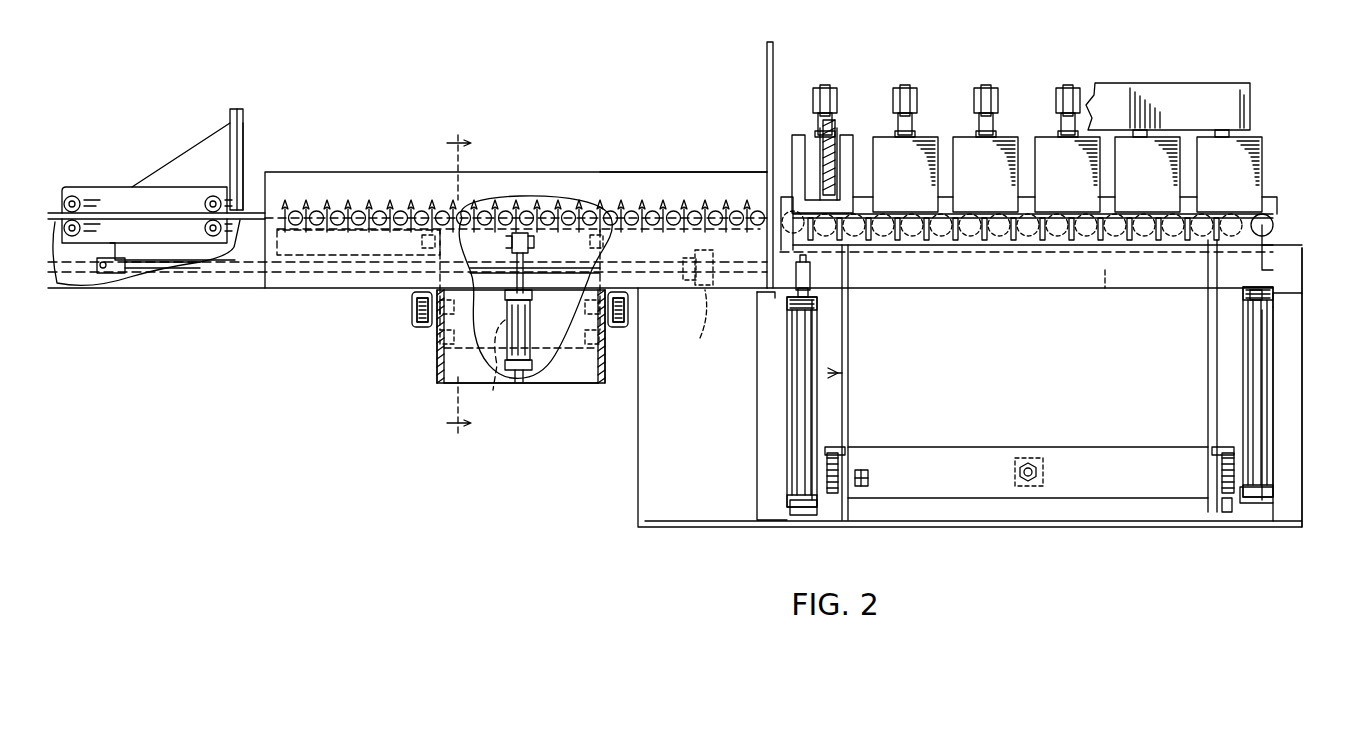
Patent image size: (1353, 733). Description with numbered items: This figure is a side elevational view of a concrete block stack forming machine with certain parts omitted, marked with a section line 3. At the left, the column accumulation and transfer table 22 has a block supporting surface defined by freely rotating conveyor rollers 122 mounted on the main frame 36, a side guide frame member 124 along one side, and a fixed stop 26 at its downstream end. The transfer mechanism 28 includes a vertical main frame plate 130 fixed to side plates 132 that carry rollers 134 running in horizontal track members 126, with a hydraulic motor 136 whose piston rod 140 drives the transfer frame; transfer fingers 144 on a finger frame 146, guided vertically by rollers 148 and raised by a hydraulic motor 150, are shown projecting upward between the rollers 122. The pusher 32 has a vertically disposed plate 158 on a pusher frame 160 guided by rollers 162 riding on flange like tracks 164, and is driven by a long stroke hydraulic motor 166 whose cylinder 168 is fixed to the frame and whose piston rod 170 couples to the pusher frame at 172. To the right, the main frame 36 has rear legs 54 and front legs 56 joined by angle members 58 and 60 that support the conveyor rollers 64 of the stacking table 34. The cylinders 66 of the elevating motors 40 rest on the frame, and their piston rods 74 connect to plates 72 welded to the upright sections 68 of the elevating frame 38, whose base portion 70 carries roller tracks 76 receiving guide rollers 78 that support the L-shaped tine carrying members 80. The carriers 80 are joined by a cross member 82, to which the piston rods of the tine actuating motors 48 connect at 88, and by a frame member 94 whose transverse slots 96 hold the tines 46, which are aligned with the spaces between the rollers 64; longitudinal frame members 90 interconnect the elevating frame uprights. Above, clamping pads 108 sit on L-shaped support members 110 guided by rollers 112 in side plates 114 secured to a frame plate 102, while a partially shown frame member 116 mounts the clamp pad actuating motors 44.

The section line 3- 3 is at (470, 283).
The column accumulation and transfer table 22 is at (403, 198).
The fixed stop 26 is at (767, 48).
The transfer mechanism 28 is at (580, 218).
The pusher 32 is at (258, 128).
The stacking table 34 is at (1041, 246).
The main frame 36 is at (672, 510).
The elevating frame 38 is at (870, 368).
The elevating motors 40 is at (792, 438).
The clamp pad actuating motors 44 is at (1053, 80).
The tines 46 is at (868, 238).
The tine actuating motors 48 is at (1040, 455).
The rear legs 54 is at (757, 407).
The front legs 56 is at (1275, 445).
The angle member 58 is at (770, 298).
The angle member 60 is at (1290, 293).
The conveyor rollers 64 is at (925, 235).
The cylinders 66 is at (815, 357).
The upright sections 68 is at (790, 258).
The base portion 70 is at (790, 505).
The plates 72 is at (812, 282).
The piston rods 74 is at (808, 297).
The roller tracks 76 is at (840, 455).
The guide rollers 78 is at (860, 488).
The tine carrying members 80 is at (848, 392).
The cross member 82 is at (1000, 455).
The connection 88 is at (1045, 470).
The frame members 90 is at (1053, 290).
The frame member 94 is at (972, 240).
The transverse slots 96 is at (928, 240).
The frame plate 102 is at (781, 205).
The clamping pads 108 is at (848, 135).
The clamping pad support member 110 is at (822, 150).
The rollers 112 is at (810, 117).
The side plates 114 is at (792, 158).
The frame member 116 is at (1195, 95).
The conveyor rollers 122 is at (530, 200).
The side guide frame member 124 is at (658, 185).
The horizontal track members 126 is at (410, 298).
The main frame plate 130 is at (545, 383).
The side plates 132 is at (437, 360).
The rollers 134 is at (420, 312).
The hydraulic motor 136 is at (488, 368).
The piston rod 140 is at (535, 264).
The transfer fingers 144 is at (340, 200).
The finger frame 146 is at (499, 245).
The rollers 148 is at (516, 371).
The hydraulic motor 150 is at (530, 335).
The plate 158 is at (245, 152).
The pusher frame 160 is at (118, 187).
The rollers 162 is at (205, 200).
The tracks 164 is at (140, 213).
The hydraulic motor 166 is at (697, 326).
The cylinder 168 is at (1105, 290).
The piston rod 170 is at (165, 270).
The coupling 172 is at (103, 273).